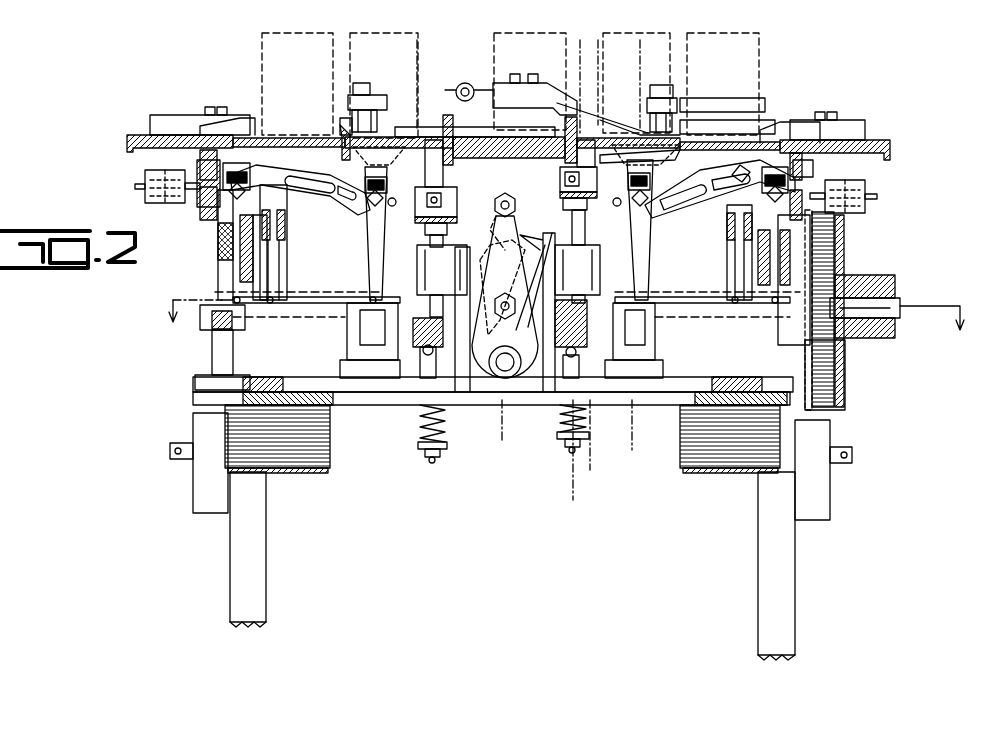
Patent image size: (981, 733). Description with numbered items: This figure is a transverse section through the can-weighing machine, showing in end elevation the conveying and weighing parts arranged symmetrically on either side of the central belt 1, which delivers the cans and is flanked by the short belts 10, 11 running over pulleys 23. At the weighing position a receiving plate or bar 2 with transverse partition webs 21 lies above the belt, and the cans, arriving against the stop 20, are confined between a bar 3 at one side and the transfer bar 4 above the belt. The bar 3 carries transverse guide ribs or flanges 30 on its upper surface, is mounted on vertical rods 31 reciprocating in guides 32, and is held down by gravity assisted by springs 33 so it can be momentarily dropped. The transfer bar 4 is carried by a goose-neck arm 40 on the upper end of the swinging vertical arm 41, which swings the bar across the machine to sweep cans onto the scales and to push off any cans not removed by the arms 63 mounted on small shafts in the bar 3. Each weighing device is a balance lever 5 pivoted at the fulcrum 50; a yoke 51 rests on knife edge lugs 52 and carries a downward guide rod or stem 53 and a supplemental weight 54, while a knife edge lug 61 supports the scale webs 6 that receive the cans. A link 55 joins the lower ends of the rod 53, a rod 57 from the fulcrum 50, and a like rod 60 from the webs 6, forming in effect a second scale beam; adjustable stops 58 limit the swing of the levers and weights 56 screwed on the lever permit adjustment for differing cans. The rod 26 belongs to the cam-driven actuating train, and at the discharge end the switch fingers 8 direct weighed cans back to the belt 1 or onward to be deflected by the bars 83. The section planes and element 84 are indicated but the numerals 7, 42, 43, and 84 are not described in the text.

The belt 1 is at (505, 158).
The receiving plate or bar 2 is at (340, 137).
The bar 3 is at (572, 175).
The transfer bar 4 is at (648, 72).
The lever 5 is at (598, 73).
The scale webs 6 is at (588, 64).
The section line 7 is at (417, 50).
The switch fingers 8 is at (370, 98).
The belt 10 is at (292, 140).
The belt 11 is at (722, 142).
The stop 20 is at (500, 135).
The transverse partition webs 21 is at (345, 122).
The pulleys 23 is at (325, 425).
The rod 26 is at (212, 322).
The transverse guide ribs or flanges 30 is at (446, 138).
The vertical rods 31 is at (445, 242).
The guides 32 is at (420, 272).
The springs 33 is at (420, 432).
The goose-neck arm 40 is at (560, 95).
The swinging vertical arm 41 is at (492, 225).
The pivot 42 is at (503, 378).
The pin 43 is at (502, 287).
The fulcrum 50 is at (275, 172).
The yoke 51 is at (247, 172).
The knife edge lugs 52 is at (218, 222).
The guide rod or stem 53 is at (230, 256).
The supplemental weight 54 is at (220, 275).
The link 55 is at (328, 305).
The weights 56 is at (145, 186).
The rod 57 is at (276, 252).
The adjustable stops 58 is at (200, 200).
The rod 60 is at (378, 244).
The knife edge lug 61 is at (392, 207).
The arm 63 is at (645, 130).
The bars 83 is at (178, 118).
The bracket 84 is at (250, 120).